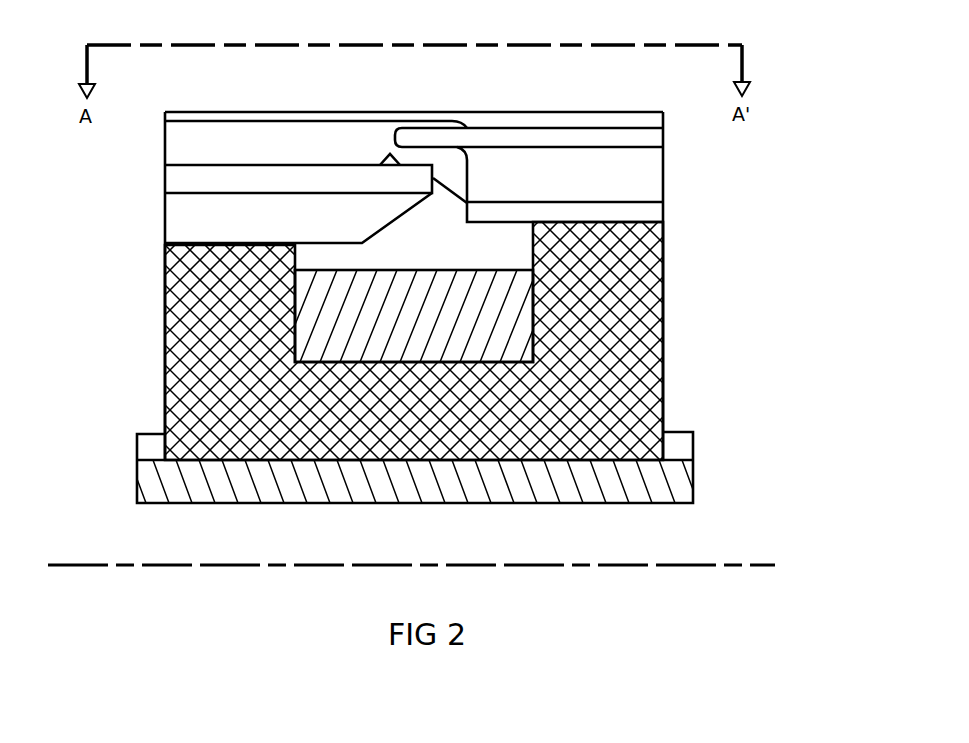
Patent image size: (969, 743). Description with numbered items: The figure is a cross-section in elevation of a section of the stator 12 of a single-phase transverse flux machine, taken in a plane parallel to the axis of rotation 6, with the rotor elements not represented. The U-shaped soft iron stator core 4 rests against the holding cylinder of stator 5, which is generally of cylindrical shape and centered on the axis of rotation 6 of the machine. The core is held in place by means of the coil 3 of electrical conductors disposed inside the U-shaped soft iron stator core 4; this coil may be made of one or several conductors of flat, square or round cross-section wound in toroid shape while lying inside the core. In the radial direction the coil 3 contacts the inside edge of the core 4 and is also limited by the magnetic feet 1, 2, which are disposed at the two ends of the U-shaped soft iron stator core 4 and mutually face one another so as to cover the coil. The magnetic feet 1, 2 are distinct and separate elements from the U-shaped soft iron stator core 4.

The magnetic foot 1 is at (260, 182).
The magnetic foot 2 is at (611, 175).
The coil of electrical conductors 3 is at (554, 300).
The U-shaped soft iron stator core 4 is at (484, 371).
The holding cylinder of stator 5 is at (497, 442).
The axis of rotation 6 is at (460, 514).
The stator 12 is at (340, 286).